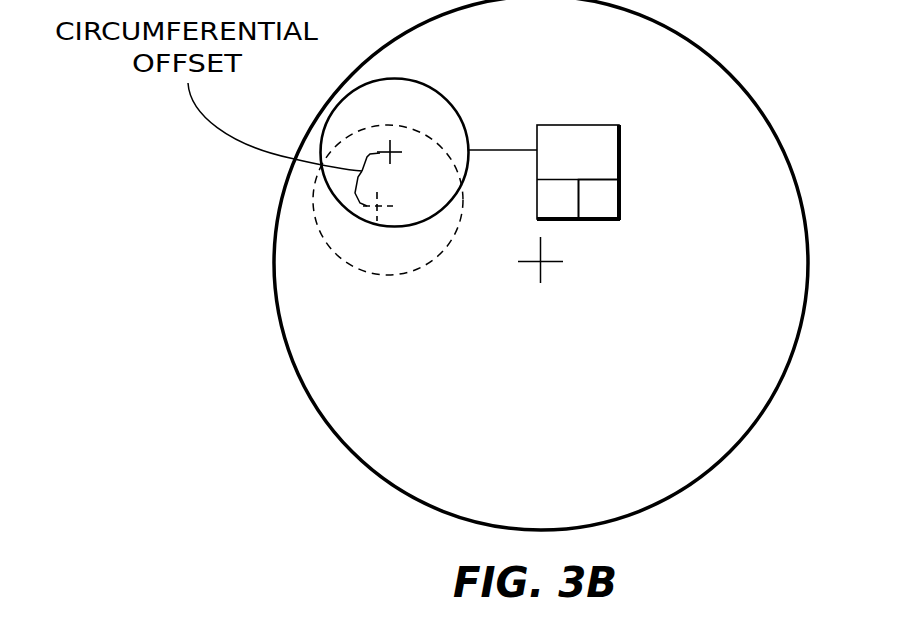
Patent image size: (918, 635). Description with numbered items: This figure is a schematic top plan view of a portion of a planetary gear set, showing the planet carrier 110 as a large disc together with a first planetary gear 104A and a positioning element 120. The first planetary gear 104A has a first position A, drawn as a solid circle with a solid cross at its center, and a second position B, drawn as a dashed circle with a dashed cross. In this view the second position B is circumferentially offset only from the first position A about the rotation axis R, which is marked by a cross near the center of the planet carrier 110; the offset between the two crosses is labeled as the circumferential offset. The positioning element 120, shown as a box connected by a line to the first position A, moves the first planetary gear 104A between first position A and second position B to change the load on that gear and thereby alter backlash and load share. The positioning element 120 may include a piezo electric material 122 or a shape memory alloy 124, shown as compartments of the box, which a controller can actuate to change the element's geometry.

The planet carrier 110 is at (560, 435).
The positioning element 120 is at (545, 172).
The piezo electric material 122 is at (558, 203).
The shape memory alloy 124 is at (600, 197).
The first planetary gear 104A is at (452, 193).
The first position A is at (445, 95).
The second position B is at (445, 250).
The rotation axis R is at (552, 265).